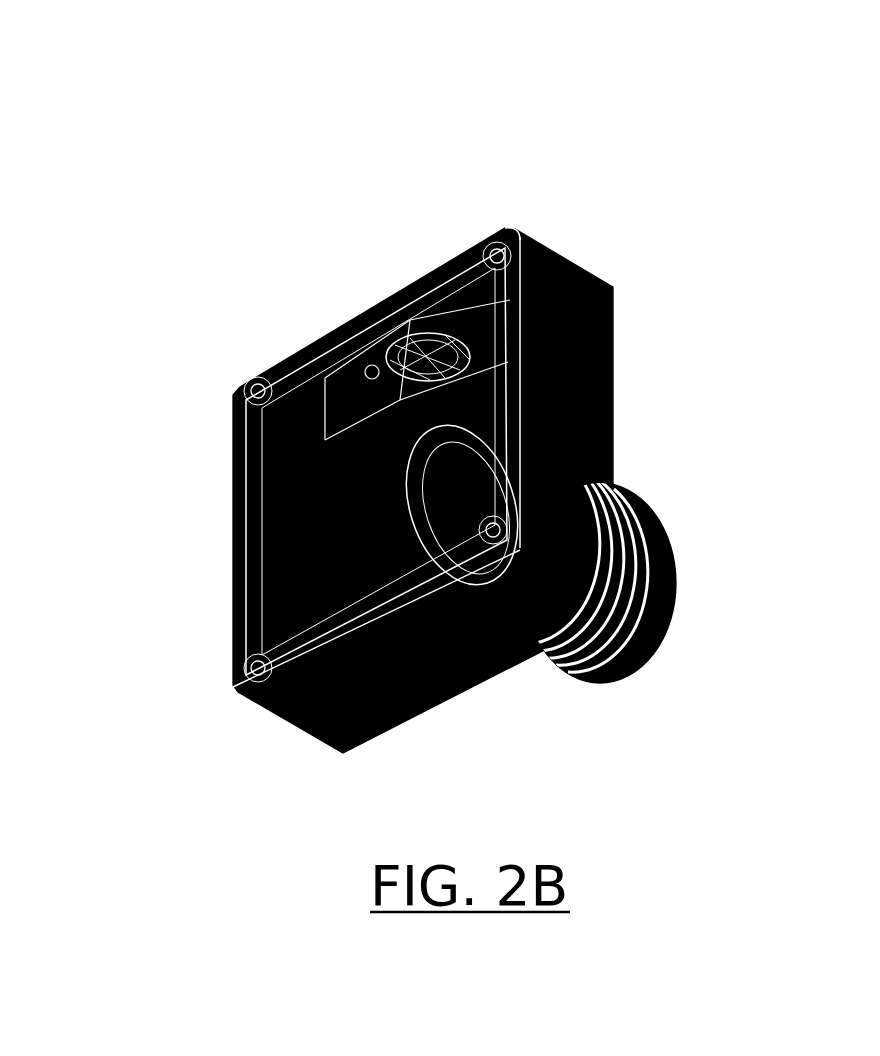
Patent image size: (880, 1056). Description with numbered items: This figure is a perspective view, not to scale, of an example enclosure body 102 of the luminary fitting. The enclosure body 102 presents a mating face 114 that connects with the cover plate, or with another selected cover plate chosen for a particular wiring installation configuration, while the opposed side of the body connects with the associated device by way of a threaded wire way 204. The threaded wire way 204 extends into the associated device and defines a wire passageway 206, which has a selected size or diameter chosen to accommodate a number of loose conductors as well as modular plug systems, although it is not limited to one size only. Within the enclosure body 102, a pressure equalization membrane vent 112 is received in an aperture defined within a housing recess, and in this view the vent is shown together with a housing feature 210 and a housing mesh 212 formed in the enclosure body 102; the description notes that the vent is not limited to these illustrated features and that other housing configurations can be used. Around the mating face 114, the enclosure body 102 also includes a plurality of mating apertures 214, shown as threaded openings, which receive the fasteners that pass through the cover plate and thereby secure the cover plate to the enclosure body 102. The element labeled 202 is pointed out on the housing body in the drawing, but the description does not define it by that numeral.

The enclosure body 102 is at (443, 33).
The pressure equalization membrane vent 112 is at (408, 356).
The mating face 114 is at (230, 529).
The housing body 202 is at (553, 277).
The threaded wire way 204 is at (650, 515).
The wire passageway 206 is at (498, 492).
The housing feature 210 is at (427, 323).
The housing mesh 212 is at (408, 347).
The mating apertures 214 is at (497, 253).